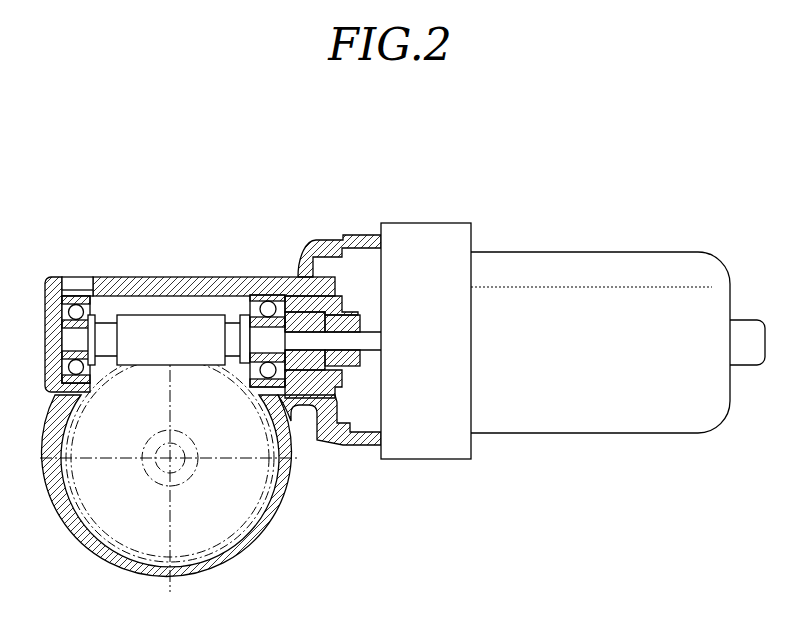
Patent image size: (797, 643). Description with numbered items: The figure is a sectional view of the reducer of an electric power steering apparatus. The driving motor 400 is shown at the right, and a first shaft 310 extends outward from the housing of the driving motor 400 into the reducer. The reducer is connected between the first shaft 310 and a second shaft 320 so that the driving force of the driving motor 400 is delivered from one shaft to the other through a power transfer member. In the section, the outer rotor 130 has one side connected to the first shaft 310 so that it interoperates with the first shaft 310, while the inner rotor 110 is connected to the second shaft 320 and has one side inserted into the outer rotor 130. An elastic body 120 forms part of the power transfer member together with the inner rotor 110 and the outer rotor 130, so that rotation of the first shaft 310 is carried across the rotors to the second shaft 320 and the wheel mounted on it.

The inner rotor 110 is at (332, 420).
The elastic body 120 is at (322, 294).
The outer rotor 130 is at (300, 285).
The first shaft 310 is at (373, 335).
The second shaft 320 is at (107, 322).
The driving motor 400 is at (545, 256).